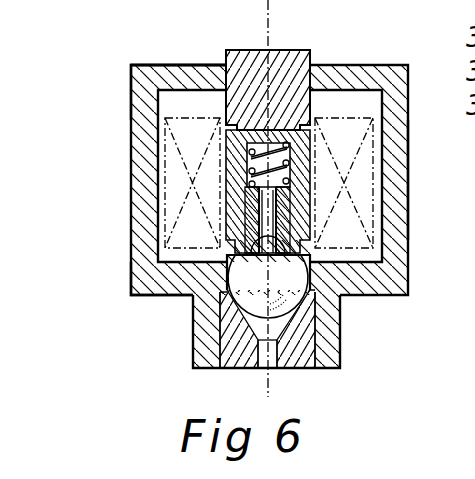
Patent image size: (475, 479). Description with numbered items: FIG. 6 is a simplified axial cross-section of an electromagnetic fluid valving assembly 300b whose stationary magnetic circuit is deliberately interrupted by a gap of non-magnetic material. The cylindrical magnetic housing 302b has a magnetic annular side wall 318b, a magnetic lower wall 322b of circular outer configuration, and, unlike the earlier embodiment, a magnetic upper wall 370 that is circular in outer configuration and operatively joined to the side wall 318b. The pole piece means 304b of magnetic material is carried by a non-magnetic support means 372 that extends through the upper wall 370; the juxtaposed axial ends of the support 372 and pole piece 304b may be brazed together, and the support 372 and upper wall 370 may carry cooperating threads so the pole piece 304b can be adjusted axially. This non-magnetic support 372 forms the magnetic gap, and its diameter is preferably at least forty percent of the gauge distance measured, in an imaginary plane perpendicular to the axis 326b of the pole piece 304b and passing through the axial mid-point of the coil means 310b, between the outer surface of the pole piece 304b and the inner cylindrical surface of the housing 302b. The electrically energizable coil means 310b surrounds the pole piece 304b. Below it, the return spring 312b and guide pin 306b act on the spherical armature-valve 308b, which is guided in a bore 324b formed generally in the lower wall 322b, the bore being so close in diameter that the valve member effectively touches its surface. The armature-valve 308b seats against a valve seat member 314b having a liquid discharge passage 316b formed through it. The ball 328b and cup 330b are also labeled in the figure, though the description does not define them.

The electromagnetic assembly 300b is at (117, 64).
The housing 302b is at (128, 108).
The pole piece means 304b is at (218, 181).
The guide pin 306b is at (240, 227).
The armature-valve 308b is at (257, 277).
The coil means 310b is at (193, 202).
The return spring 312b is at (250, 163).
The valve seat member 314b is at (292, 357).
The liquid discharge passage means 316b is at (337, 350).
The annular side wall 318b is at (388, 175).
The lower wall 322b is at (152, 288).
The guide bore 324b is at (222, 322).
The axis 326b is at (268, 30).
The ball valve member 328b is at (258, 295).
The valve cup / retainer 330b is at (227, 262).
The upper wall 370 is at (178, 72).
The support means 372 is at (245, 50).